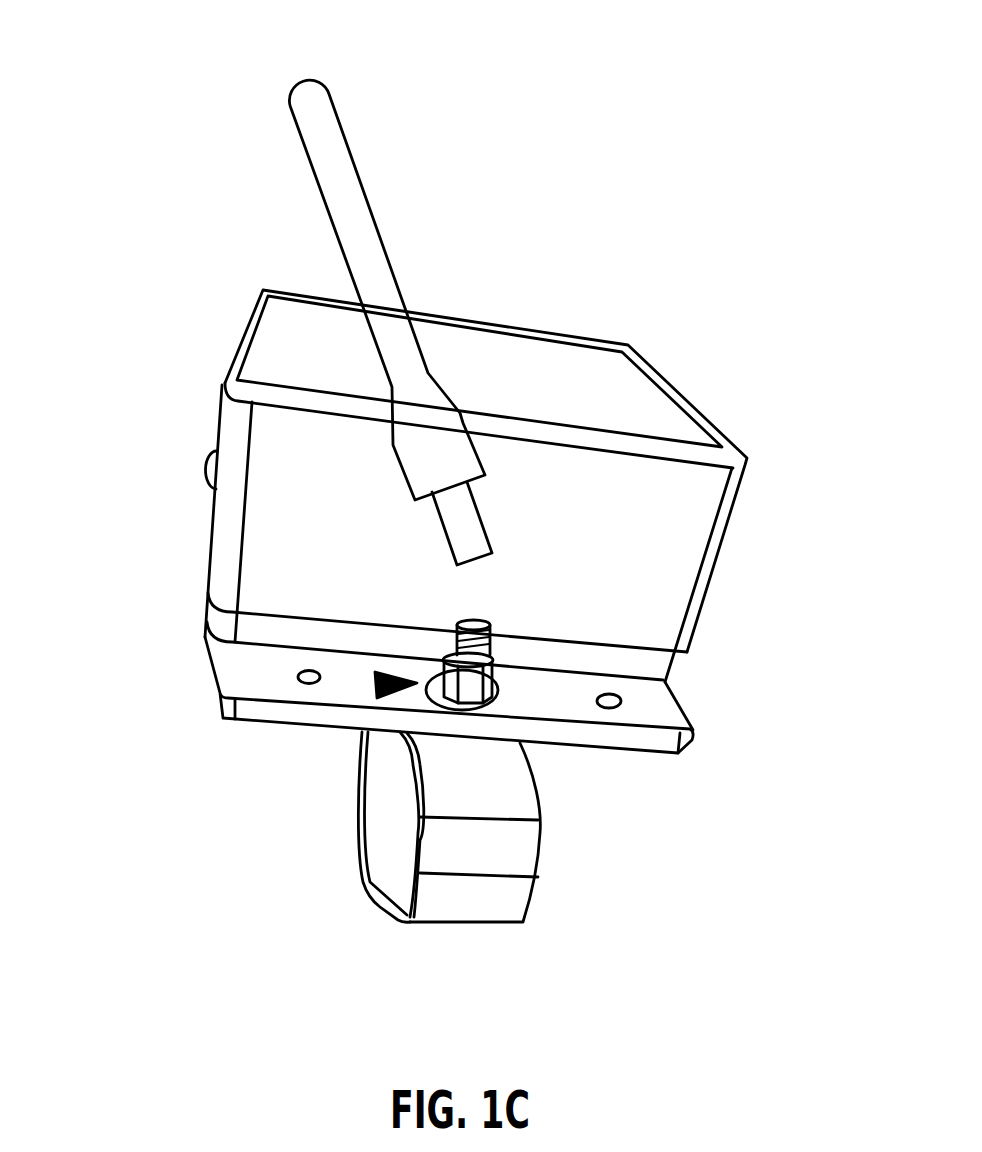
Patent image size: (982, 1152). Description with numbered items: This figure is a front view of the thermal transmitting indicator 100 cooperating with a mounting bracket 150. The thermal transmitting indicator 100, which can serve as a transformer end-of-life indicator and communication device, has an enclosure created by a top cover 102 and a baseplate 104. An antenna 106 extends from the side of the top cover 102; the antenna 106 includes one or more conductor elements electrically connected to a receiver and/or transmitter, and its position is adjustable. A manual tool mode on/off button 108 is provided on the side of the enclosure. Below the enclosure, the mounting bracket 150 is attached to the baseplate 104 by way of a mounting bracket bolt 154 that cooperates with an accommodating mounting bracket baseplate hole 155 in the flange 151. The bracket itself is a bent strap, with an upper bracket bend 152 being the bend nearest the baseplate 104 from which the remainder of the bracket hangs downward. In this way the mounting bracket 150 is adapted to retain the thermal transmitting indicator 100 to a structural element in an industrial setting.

The thermal transmitting indicator 100 is at (485, 46).
The top cover 102 is at (477, 373).
The baseplate 104 is at (673, 710).
The antenna 106 is at (338, 245).
The manual tool mode on/off button 108 is at (205, 472).
The mounting bracket 150 is at (493, 863).
The flange 151 is at (568, 693).
The upper bracket bend 152 is at (492, 860).
The mounting bracket bolt 154 is at (450, 650).
The mounting bracket baseplate hole 155 is at (375, 685).